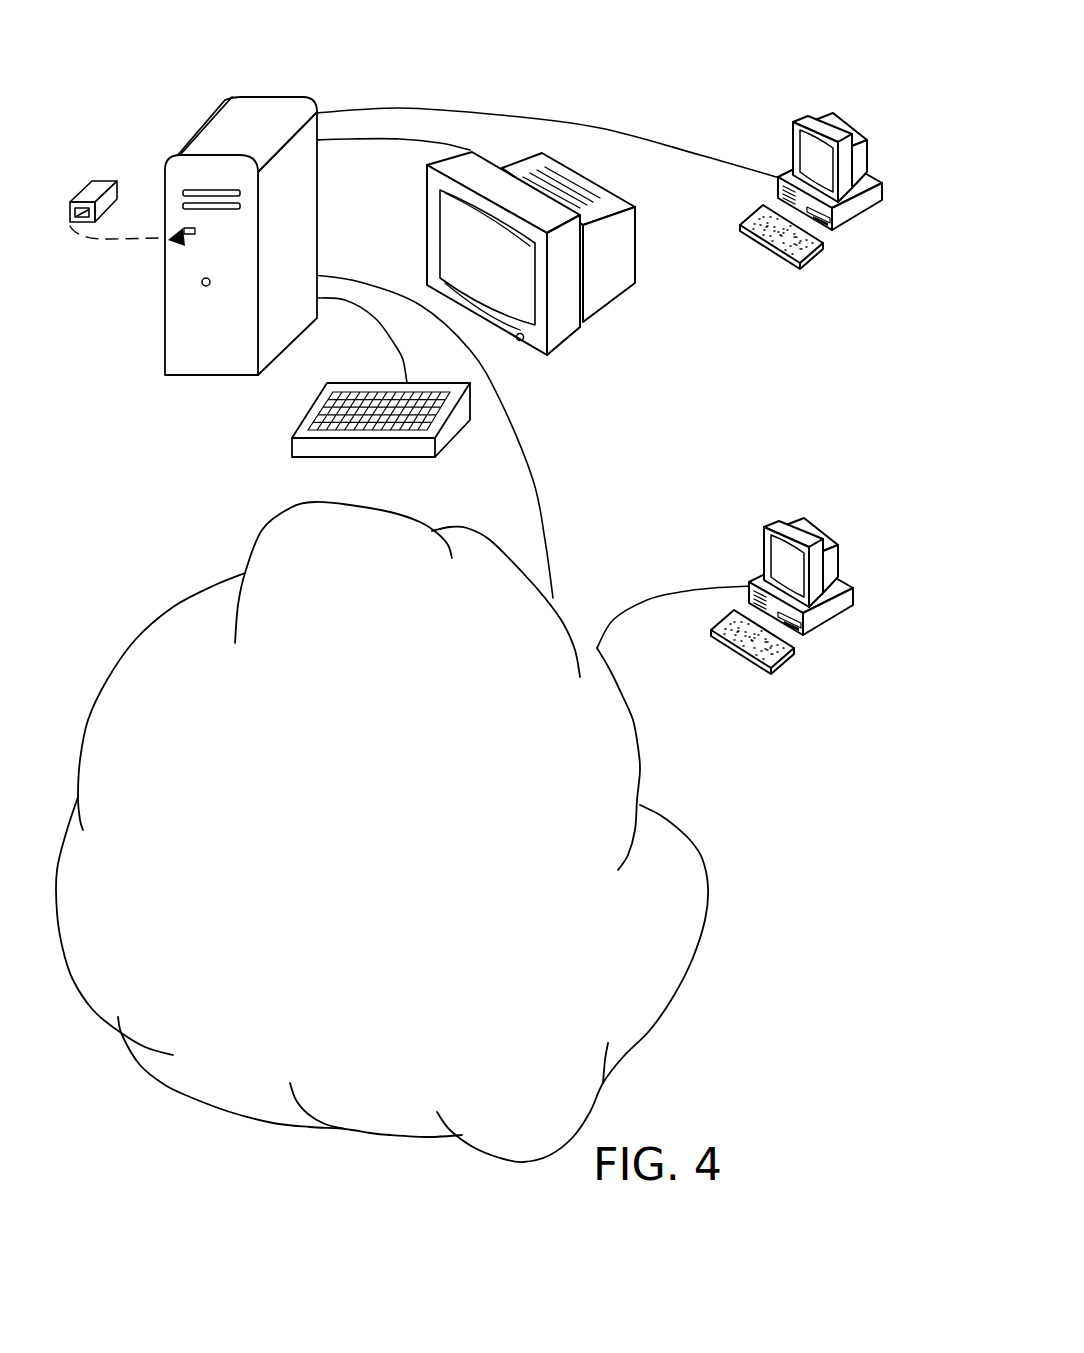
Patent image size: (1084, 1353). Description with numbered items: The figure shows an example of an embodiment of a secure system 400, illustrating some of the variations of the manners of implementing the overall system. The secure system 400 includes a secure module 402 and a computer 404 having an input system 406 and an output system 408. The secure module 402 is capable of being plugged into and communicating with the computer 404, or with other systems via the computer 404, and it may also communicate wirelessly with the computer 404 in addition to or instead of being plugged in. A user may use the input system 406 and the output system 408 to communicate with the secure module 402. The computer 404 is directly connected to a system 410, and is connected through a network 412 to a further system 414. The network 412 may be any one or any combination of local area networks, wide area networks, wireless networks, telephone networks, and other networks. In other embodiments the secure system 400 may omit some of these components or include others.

The secure system 400 is at (582, 89).
The secure module 402 is at (117, 181).
The computer 404 is at (302, 97).
The input system 406 is at (420, 457).
The output system 408 is at (635, 255).
The system 410 is at (882, 183).
The network 412 is at (382, 832).
The system 414 is at (853, 588).